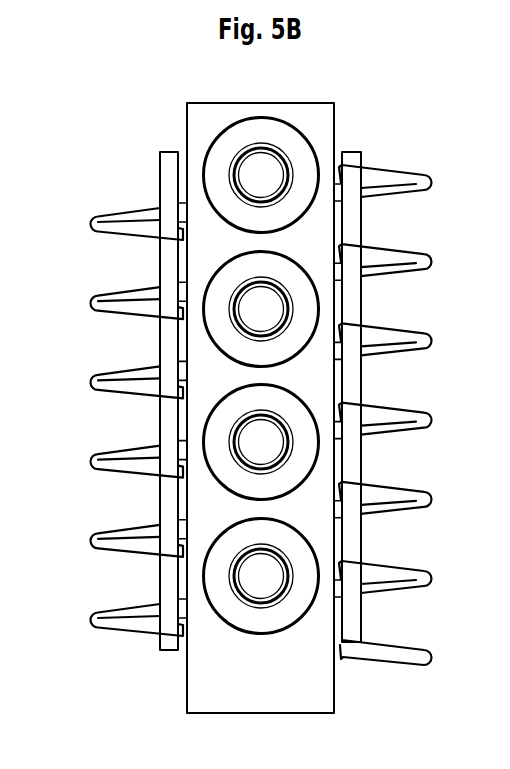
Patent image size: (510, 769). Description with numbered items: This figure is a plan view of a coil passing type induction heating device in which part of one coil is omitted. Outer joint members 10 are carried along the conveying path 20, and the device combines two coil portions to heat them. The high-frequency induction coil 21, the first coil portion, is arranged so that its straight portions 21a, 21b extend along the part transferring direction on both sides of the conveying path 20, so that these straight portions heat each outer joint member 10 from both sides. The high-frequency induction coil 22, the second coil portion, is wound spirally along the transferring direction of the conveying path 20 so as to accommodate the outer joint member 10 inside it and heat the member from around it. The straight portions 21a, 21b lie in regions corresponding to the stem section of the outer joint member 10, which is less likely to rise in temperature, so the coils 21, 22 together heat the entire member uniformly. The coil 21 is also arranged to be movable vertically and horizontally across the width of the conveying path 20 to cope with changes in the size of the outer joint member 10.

The outer joint member 10 is at (297, 158).
The conveying path 20 is at (212, 685).
The high-frequency induction coil 21 is at (250, 401).
The straight portion 21a is at (353, 378).
The straight portion 21b is at (168, 342).
The high-frequency induction coil 22 is at (95, 226).